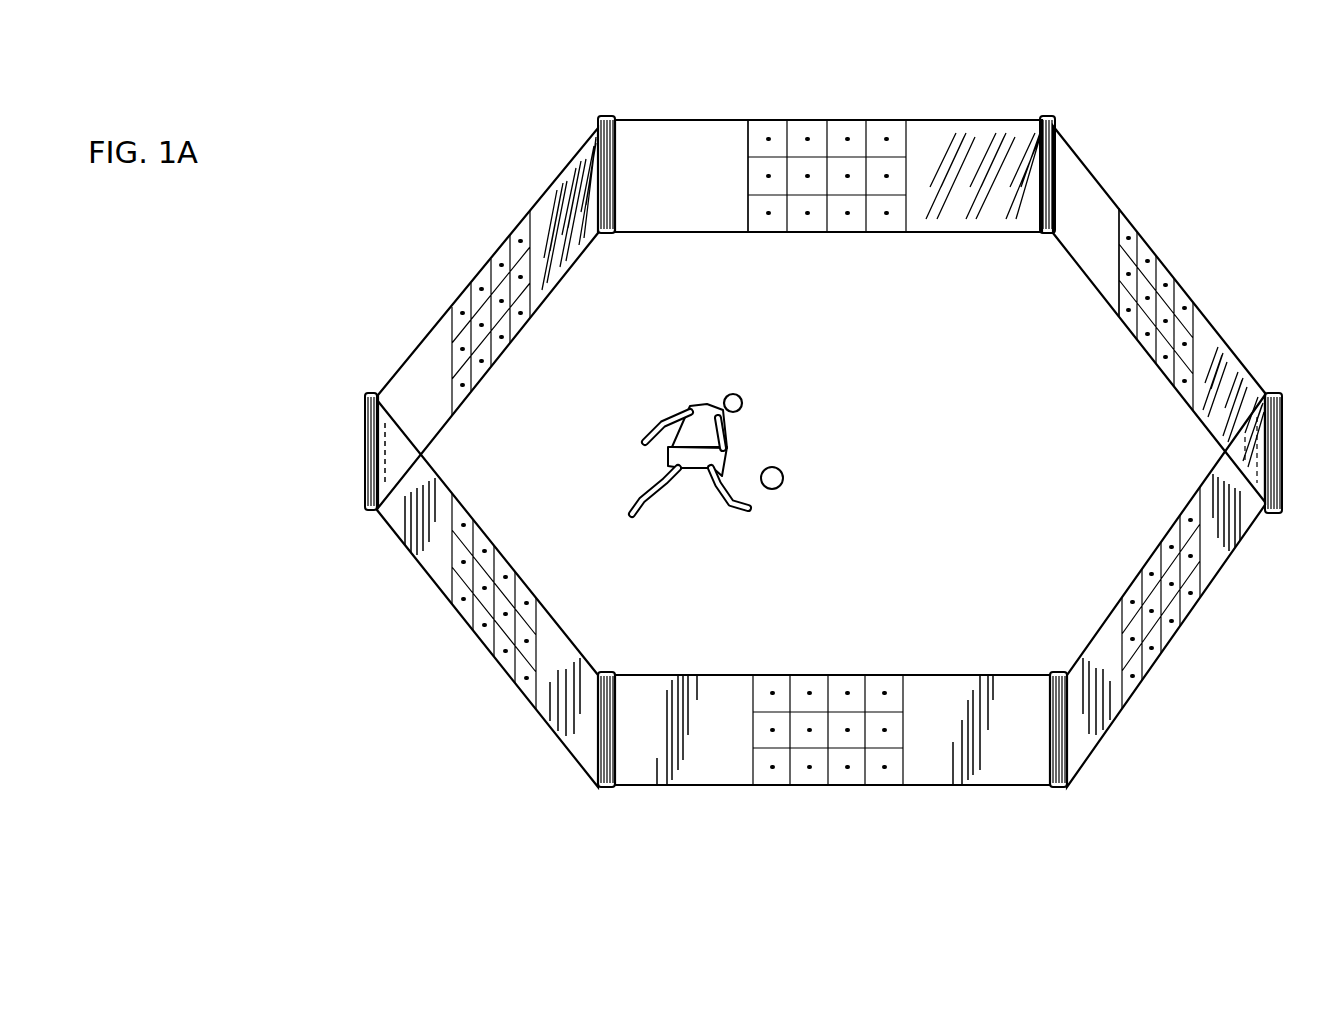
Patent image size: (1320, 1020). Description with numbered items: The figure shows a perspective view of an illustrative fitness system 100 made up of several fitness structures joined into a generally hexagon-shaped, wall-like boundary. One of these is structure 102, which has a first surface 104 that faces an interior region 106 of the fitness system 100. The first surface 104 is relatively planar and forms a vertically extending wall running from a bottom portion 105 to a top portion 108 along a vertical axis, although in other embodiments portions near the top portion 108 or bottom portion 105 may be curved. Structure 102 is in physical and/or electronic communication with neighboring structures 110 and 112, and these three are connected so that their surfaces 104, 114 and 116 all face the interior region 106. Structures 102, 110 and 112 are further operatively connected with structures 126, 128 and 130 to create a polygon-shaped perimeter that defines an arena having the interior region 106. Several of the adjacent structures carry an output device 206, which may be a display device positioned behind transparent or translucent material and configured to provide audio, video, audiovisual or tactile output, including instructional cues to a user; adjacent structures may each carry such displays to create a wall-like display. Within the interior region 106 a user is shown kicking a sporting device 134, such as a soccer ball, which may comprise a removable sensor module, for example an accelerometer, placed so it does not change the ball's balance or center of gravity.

The fitness system 100 is at (440, 92).
The structure 102 is at (587, 125).
The first surface 104 is at (449, 405).
The bottom portion 105 is at (378, 488).
The interior region 106 is at (941, 361).
The top portion 108 is at (376, 377).
The structure 110 is at (620, 240).
The structure 112 is at (1262, 497).
The surface 114 is at (700, 193).
The surface 116 is at (1100, 249).
The structure 126 is at (575, 760).
The structure 128 is at (1048, 793).
The structure 130 is at (1073, 773).
The sporting device 134 is at (780, 466).
The output device 206 is at (838, 118).